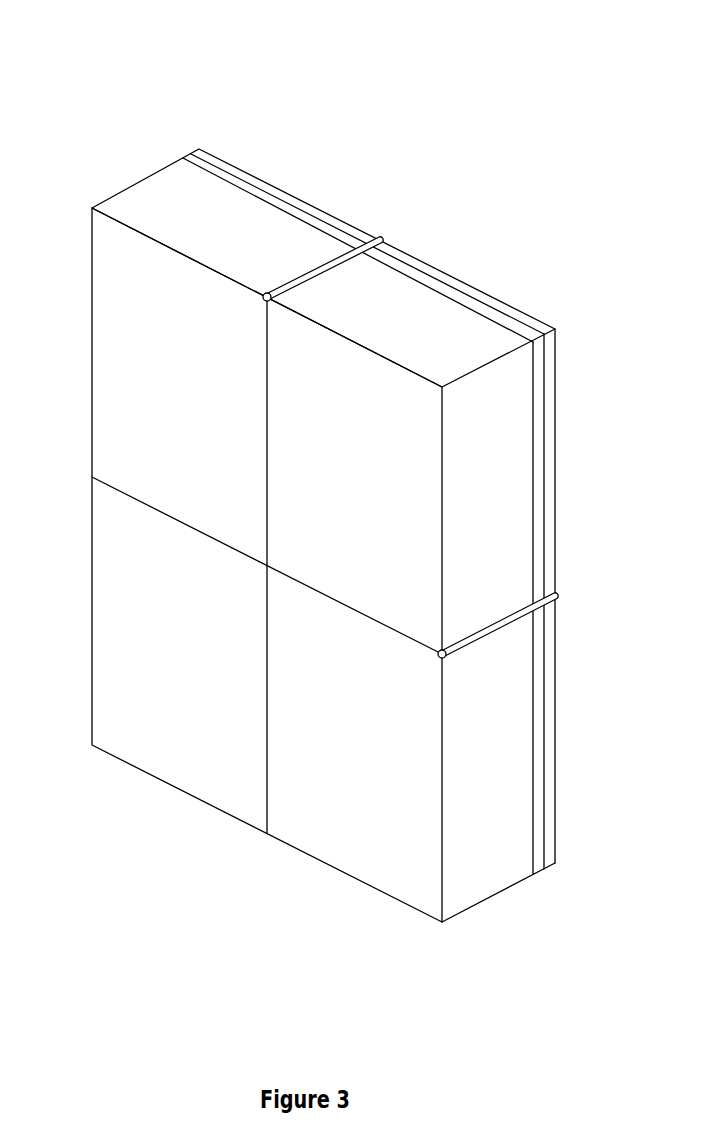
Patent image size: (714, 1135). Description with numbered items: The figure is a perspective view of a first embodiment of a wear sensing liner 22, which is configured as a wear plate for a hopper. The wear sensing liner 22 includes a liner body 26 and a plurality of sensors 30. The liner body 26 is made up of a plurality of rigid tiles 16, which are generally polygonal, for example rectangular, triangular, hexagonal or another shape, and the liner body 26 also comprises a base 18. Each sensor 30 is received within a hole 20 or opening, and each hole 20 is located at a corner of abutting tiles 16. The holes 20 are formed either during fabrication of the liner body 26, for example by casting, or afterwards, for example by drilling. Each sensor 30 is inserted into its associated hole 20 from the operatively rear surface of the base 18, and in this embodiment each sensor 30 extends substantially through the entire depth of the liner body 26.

The wear sensing liner 22 is at (158, 98).
The liner body 26 is at (100, 184).
The rigid tiles 16 is at (117, 340).
The base 18 is at (543, 490).
The hole 20 is at (267, 293).
The sensors 30 is at (338, 254).